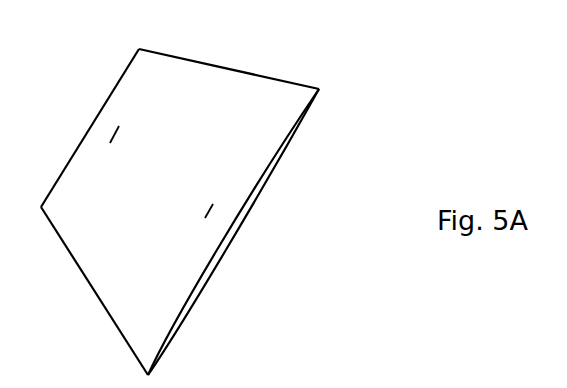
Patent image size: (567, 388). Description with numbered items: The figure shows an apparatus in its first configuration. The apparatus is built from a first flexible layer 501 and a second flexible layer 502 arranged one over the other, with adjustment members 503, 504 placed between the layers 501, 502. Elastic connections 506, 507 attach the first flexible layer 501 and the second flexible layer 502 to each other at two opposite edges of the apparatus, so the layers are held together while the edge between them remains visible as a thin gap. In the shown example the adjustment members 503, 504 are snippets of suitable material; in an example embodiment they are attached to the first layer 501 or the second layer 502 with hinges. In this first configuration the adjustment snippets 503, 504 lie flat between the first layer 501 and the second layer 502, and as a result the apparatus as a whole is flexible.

The first flexible layer 501 is at (278, 144).
The second flexible layer 502 is at (262, 198).
The adjustment member 503 is at (112, 135).
The adjustment member 504 is at (205, 215).
The elastic connection 506 is at (95, 296).
The elastic connection 507 is at (240, 71).